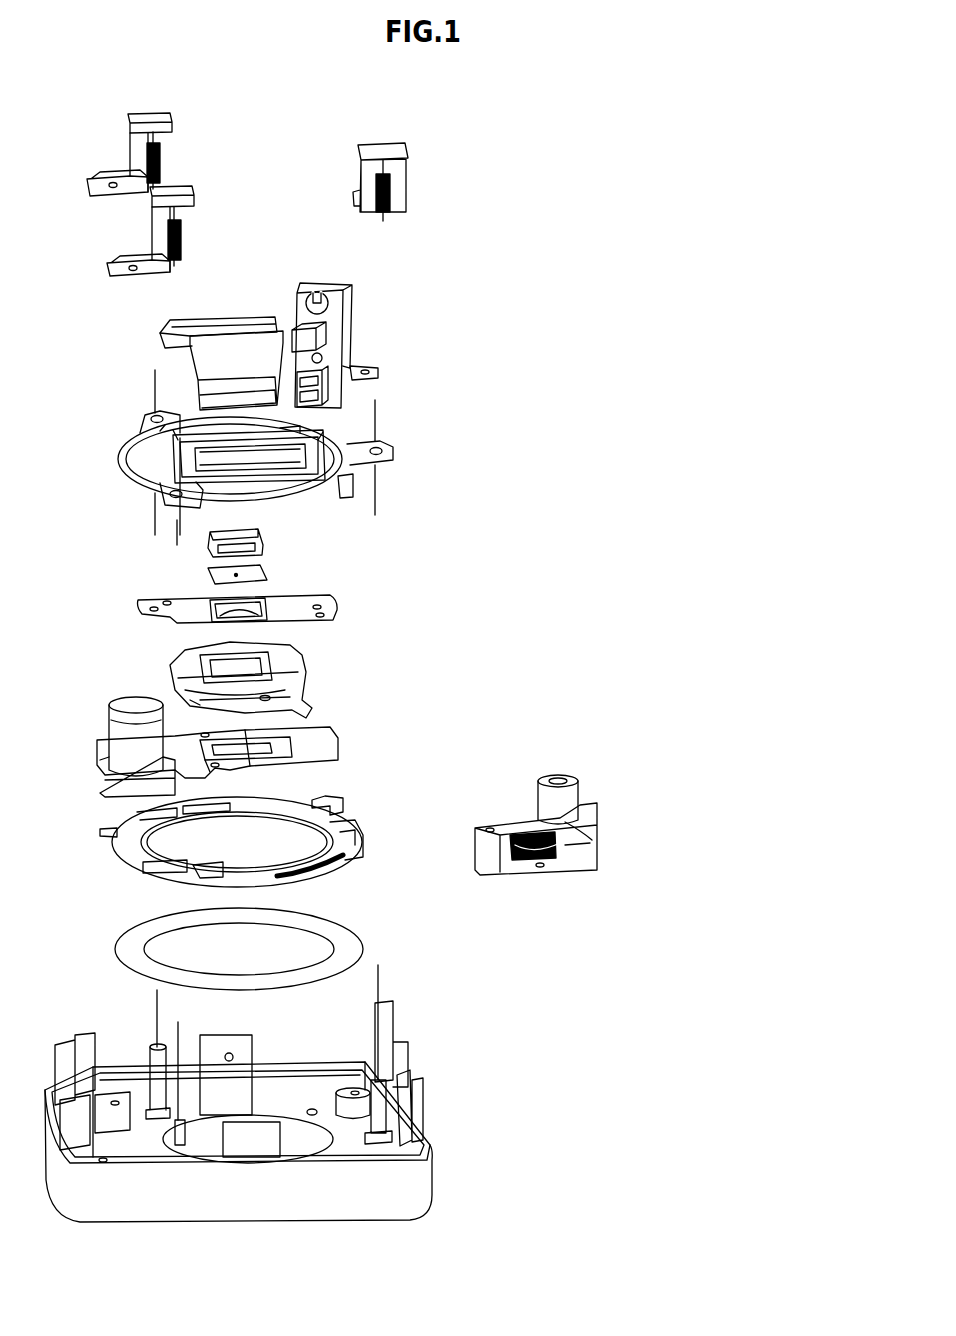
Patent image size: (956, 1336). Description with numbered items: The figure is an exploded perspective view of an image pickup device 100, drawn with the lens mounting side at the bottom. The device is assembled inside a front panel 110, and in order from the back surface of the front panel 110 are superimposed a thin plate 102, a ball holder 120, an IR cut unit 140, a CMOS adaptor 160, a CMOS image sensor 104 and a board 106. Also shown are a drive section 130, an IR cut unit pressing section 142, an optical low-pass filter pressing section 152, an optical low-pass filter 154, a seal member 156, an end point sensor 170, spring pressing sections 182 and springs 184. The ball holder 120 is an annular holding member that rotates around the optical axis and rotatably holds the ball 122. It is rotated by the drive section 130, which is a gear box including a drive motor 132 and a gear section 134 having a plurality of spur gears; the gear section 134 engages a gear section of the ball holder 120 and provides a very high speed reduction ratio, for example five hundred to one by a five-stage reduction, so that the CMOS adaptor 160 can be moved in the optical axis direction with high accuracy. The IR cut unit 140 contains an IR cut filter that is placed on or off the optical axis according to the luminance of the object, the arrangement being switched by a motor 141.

The image pickup device 100 is at (602, 160).
The thin plate 102 is at (350, 941).
The CMOS image sensor 104 is at (200, 398).
The board 106 is at (205, 361).
The front panel 110 is at (447, 1171).
The ball holder 120 is at (376, 835).
The ball 122 is at (360, 855).
The drive section 130 is at (563, 833).
The drive motor 132 is at (543, 800).
The gear section 134 is at (528, 860).
The IR cut unit 140 is at (350, 746).
The motor 141 is at (120, 726).
The IR cut unit pressing section 142 is at (320, 670).
The optical low-pass filter pressing section 152 is at (345, 606).
The optical low-pass filter 154 is at (267, 574).
The seal member 156 is at (265, 541).
The CMOS adaptor 160 is at (318, 499).
The end point sensor 170 is at (380, 322).
The spring pressing sections 182 is at (172, 122).
The springs 184 is at (160, 160).